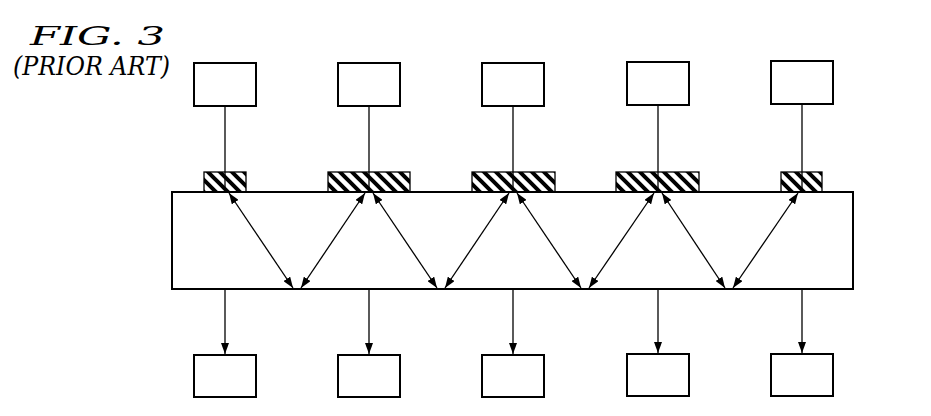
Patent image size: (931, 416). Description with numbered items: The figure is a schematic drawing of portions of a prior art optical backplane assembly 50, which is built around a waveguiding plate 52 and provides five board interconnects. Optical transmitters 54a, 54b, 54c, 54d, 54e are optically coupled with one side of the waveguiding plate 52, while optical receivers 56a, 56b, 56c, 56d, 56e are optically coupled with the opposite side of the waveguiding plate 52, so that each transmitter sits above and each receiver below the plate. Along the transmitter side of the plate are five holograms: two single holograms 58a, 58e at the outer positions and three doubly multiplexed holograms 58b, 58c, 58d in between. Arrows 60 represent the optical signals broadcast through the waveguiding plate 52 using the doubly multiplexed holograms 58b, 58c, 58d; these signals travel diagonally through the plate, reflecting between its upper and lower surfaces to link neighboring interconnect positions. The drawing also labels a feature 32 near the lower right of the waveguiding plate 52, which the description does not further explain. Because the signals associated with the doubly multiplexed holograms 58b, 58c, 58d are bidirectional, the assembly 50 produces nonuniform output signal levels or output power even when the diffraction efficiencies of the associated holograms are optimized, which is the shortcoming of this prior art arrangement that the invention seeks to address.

The optical backplane assembly 50 is at (108, 148).
The waveguiding plate 52 is at (172, 242).
The substrate bottom surface 32 is at (817, 289).
The optical transmitter 54a is at (222, 62).
The optical transmitter 54b is at (369, 62).
The optical transmitter 54c is at (513, 62).
The optical transmitter 54d is at (658, 61).
The optical transmitter 54e is at (802, 60).
The optical receiver 56a is at (193, 378).
The optical receiver 56b is at (338, 378).
The optical receiver 56c is at (482, 378).
The optical receiver 56d is at (627, 378).
The optical receiver 56e is at (772, 378).
The single hologram 58a is at (210, 172).
The doubly multiplexed hologram 58b is at (348, 172).
The doubly multiplexed hologram 58c is at (490, 172).
The doubly multiplexed hologram 58d is at (674, 172).
The single hologram 58e is at (810, 172).
The arrows 60 is at (267, 243).